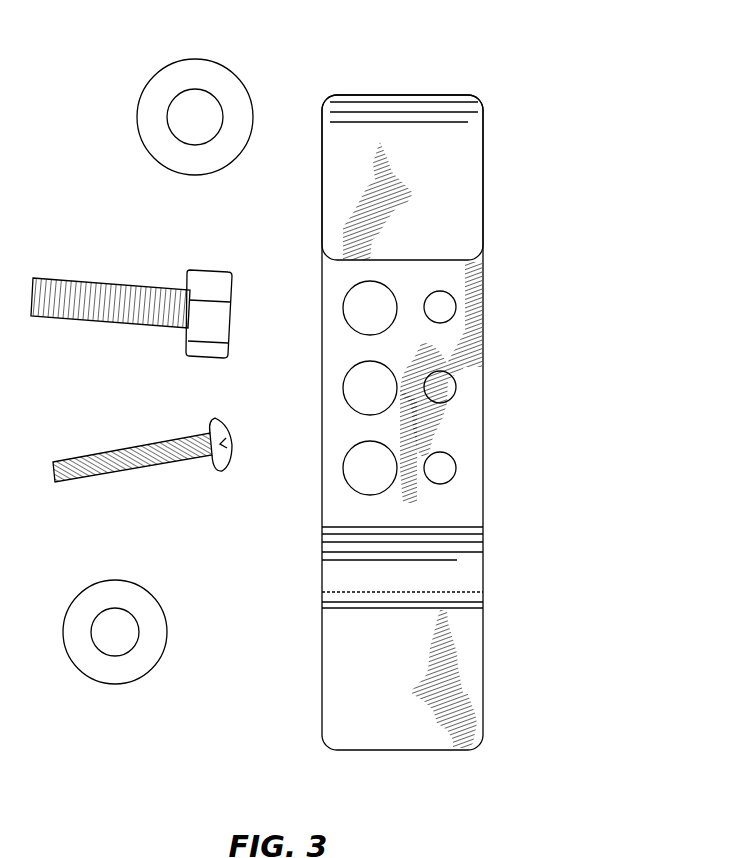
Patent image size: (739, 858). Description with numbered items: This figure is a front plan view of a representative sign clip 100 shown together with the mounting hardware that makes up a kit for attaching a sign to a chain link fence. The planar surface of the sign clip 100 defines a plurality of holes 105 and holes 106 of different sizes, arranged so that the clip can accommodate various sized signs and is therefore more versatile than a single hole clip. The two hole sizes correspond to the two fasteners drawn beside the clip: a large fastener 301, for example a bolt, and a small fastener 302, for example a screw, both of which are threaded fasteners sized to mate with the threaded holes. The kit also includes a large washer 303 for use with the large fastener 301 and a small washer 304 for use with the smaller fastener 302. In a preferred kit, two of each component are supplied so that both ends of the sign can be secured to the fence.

The sign clip 100 is at (542, 108).
The holes 105 is at (446, 475).
The holes 106 is at (362, 478).
The large fastener 301 is at (205, 283).
The small fastener 302 is at (215, 432).
The large washer 303 is at (157, 77).
The small washer 304 is at (140, 585).